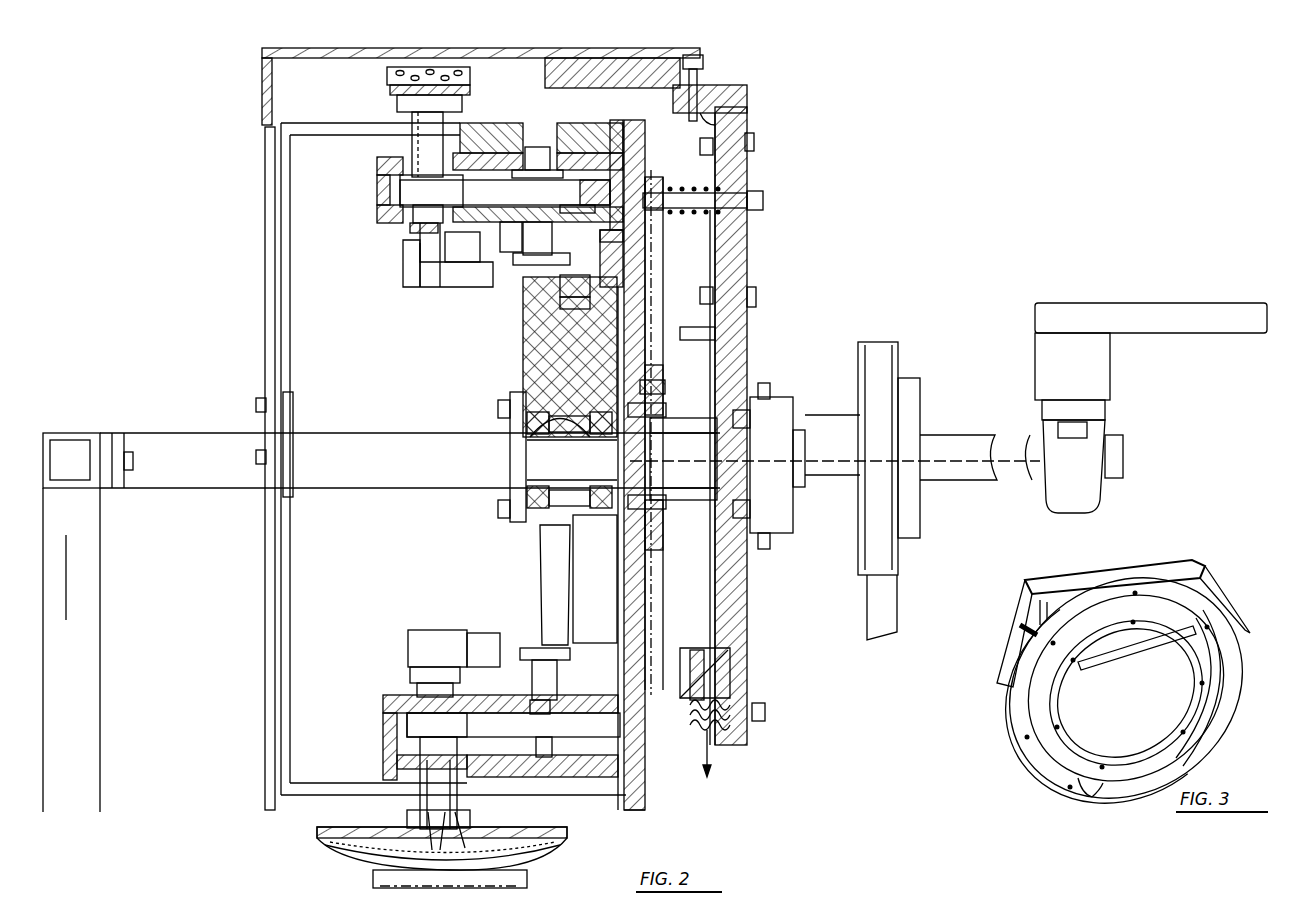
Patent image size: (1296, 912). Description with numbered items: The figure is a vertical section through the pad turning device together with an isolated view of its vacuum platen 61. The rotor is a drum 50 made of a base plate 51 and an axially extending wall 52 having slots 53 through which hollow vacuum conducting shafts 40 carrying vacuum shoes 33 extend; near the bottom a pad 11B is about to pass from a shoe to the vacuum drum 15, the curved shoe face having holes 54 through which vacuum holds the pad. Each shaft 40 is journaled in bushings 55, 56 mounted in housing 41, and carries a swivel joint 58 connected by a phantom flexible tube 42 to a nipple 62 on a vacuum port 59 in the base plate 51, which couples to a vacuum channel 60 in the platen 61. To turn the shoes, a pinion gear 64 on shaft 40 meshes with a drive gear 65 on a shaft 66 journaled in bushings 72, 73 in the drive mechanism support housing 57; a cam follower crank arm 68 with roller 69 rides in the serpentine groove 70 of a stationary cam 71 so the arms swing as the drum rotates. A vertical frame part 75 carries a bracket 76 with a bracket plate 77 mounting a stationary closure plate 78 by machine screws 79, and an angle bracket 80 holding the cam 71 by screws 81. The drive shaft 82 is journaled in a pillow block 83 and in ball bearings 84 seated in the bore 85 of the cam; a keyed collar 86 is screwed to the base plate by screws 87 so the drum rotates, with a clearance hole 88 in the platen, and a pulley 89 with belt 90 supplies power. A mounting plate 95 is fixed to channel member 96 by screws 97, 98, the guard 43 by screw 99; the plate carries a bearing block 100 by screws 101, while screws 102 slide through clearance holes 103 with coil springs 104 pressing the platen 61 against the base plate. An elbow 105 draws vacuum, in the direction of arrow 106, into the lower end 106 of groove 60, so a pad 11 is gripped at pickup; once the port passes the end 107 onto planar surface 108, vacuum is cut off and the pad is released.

In FIG. 2, the pad 11 is at (565, 850).
In FIG. 2, the pad 11B is at (322, 852).
In FIG. 2, the vacuum drum 15 is at (527, 876).
In FIG. 2, the vacuum shoe 33 is at (387, 74).
In FIG. 2, the hollow vacuum conducting shaft 40 is at (412, 124).
In FIG. 2, the housing 41 is at (377, 190).
In FIG. 2, the flexible tube 42 is at (475, 300).
In FIG. 2, the guard 43 is at (262, 76).
In FIG. 2, the drum 50 is at (625, 818).
In FIG. 2, the base plate 51 is at (646, 800).
In FIG. 2, the axially extending wall 52 is at (620, 806).
In FIG. 2, the slot 53 is at (312, 108).
In FIG. 2, the holes 54 is at (470, 78).
In FIG. 2, the bushing 55 is at (377, 172).
In FIG. 2, the bushing 56 is at (418, 230).
In FIG. 2, the drive mechanism support housing 57 is at (590, 150).
In FIG. 2, the swivel joint 58 is at (403, 280).
In FIG. 2, the vacuum port 59 is at (650, 255).
In FIG. 2, the vacuum channel 60 is at (660, 237).
In FIG. 3, the vacuum channel 60 is at (1212, 706).
In FIG. 2, the vacuum platen 61 is at (668, 282).
In FIG. 3, the vacuum platen 61 is at (1040, 784).
In FIG. 2, the nipple 62 is at (632, 178).
In FIG. 2, the pinion gear 64 is at (400, 200).
In FIG. 2, the drive gear 65 is at (617, 175).
In FIG. 2, the shaft 66 is at (538, 147).
In FIG. 2, the cam follower crank arm 68 is at (525, 308).
In FIG. 2, the cam follower roller 69 is at (530, 328).
In FIG. 2, the cam groove 70 is at (530, 352).
In FIG. 2, the stationary cam 71 is at (540, 560).
In FIG. 2, the bushing 72 is at (550, 165).
In FIG. 2, the bushing 73 is at (520, 236).
In FIG. 2, the vertical part of the machine frame 75 is at (100, 552).
In FIG. 2, the bracket 76 is at (165, 433).
In FIG. 2, the bracket plate 77 is at (293, 410).
In FIG. 2, the stationary closure plate 78 is at (265, 293).
In FIG. 2, the machine screws 79 is at (256, 455).
In FIG. 2, the angle bracket 80 is at (510, 430).
In FIG. 2, the machine screws 81 is at (505, 405).
In FIG. 2, the drive shaft 82 is at (955, 440).
In FIG. 2, the pillow block 83 is at (1090, 504).
In FIG. 2, the ball bearings 84 is at (560, 397).
In FIG. 2, the bore 85 is at (527, 520).
In FIG. 2, the collar 86 is at (680, 500).
In FIG. 2, the screw 87 is at (666, 408).
In FIG. 2, the clearance hole 88 is at (665, 386).
In FIG. 2, the pulley 89 is at (900, 360).
In FIG. 2, the belt 90 is at (898, 605).
In FIG. 2, the mounting plate 95 is at (748, 240).
In FIG. 2, the channel member 96 is at (747, 112).
In FIG. 3, the channel member 96 is at (1062, 575).
In FIG. 2, the machine screw 97 is at (755, 142).
In FIG. 2, the machine screw 98 is at (757, 292).
In FIG. 2, the machine screw 99 is at (690, 58).
In FIG. 2, the bearing block 100 is at (775, 405).
In FIG. 2, the screws 101 is at (762, 384).
In FIG. 2, the screws 102 is at (766, 200).
In FIG. 2, the clearance holes 103 is at (735, 196).
In FIG. 2, the coil spring 104 is at (700, 195).
In FIG. 3, the coil spring 104 is at (1020, 632).
In FIG. 2, the elbow 105 is at (722, 630).
In FIG. 2, the lower end of groove 106 is at (712, 762).
In FIG. 3, the lower end of groove 106 is at (1092, 797).
In FIG. 3, the end of vacuum groove 107 is at (1200, 640).
In FIG. 3, the planar surface 108 is at (1194, 612).